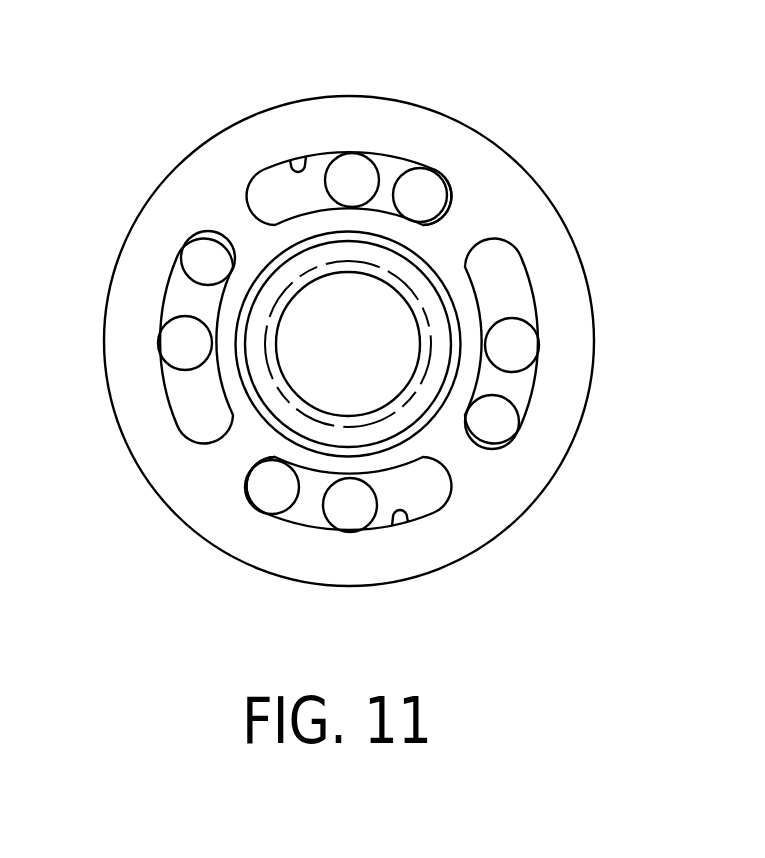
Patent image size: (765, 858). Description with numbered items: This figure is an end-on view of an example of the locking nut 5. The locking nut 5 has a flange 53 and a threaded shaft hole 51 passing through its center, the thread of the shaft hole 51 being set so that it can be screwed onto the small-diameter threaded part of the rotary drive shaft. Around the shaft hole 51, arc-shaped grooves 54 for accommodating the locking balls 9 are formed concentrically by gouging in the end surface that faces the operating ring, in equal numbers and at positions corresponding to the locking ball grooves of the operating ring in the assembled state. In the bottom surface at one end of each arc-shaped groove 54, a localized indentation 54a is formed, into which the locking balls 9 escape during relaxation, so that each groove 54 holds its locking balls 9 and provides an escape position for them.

The locking nut 5 is at (655, 121).
The locking ball 9 is at (168, 347).
The threaded shaft hole 51 is at (387, 318).
The flange 53 is at (575, 327).
The arc-shaped groove 54 is at (293, 163).
The localized indentation 54a is at (427, 183).